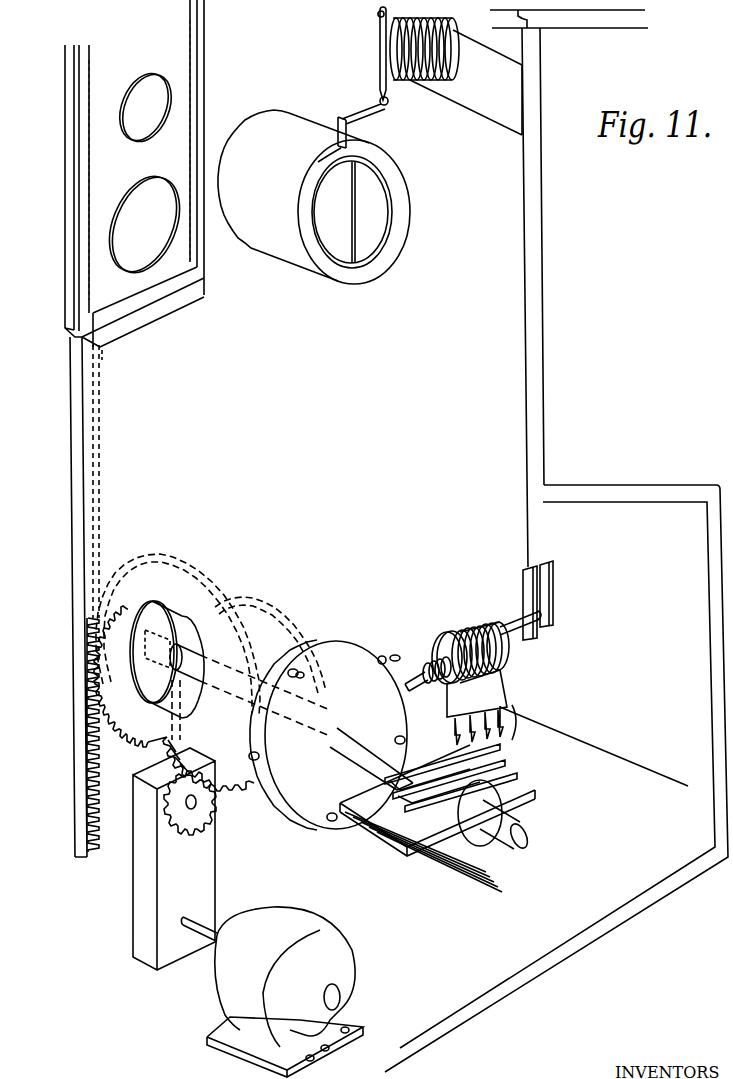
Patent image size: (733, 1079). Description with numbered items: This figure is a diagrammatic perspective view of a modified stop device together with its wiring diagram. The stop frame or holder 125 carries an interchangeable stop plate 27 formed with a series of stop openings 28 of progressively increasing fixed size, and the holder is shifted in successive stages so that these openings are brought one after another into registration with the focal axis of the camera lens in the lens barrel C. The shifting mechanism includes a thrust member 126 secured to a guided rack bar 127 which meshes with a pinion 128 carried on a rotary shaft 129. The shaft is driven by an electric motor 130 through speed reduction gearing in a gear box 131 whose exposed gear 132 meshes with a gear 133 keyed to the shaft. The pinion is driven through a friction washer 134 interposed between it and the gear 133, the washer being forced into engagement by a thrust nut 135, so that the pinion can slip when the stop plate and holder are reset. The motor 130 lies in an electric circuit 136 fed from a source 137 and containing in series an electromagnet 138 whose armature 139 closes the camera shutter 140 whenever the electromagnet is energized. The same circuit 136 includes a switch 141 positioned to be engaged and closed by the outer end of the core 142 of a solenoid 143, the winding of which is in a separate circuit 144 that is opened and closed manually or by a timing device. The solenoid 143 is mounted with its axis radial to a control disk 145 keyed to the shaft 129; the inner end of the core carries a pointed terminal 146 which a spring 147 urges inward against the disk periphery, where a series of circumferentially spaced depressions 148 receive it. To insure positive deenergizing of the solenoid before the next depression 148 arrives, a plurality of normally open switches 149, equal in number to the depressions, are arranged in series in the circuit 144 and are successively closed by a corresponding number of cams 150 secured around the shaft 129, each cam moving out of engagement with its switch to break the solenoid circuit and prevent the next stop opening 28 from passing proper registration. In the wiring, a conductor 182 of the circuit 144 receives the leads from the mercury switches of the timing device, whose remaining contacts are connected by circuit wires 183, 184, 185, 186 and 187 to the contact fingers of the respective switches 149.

The stop plate 27 is at (100, 161).
The stop openings 28 is at (166, 95).
The stop frame or holder 125 is at (86, 254).
The thrust member 126 is at (145, 316).
The rack bar 127 is at (82, 531).
The pinion 128 is at (167, 580).
The rotary shaft 129 is at (497, 822).
The electric motor 130 is at (341, 953).
The gear box 131 is at (185, 875).
The exposed gear 132 is at (201, 815).
The gear 133 is at (288, 618).
The friction washer 134 is at (196, 609).
The thrust nut 135 is at (130, 673).
The electric circuit 136 is at (543, 405).
The source 137 is at (593, 18).
The electromagnet 138 is at (440, 62).
The armature 139 is at (383, 64).
The camera shutter 140 is at (376, 216).
The switch 141 is at (541, 598).
The core 142 is at (510, 632).
The solenoid 143 is at (479, 630).
The circuit 144 is at (663, 782).
The control disk 145 is at (359, 656).
The pointed terminal 146 is at (408, 687).
The spring 147 is at (465, 640).
The depressions 148 is at (293, 670).
The switches 149 is at (476, 742).
The cams 150 is at (492, 780).
The conductor 182 is at (676, 783).
The circuit wire 183 is at (452, 876).
The circuit wire 184 is at (477, 882).
The circuit wire 185 is at (495, 890).
The circuit wire 186 is at (502, 876).
The circuit wire 187 is at (496, 867).
The lens barrel C is at (298, 135).